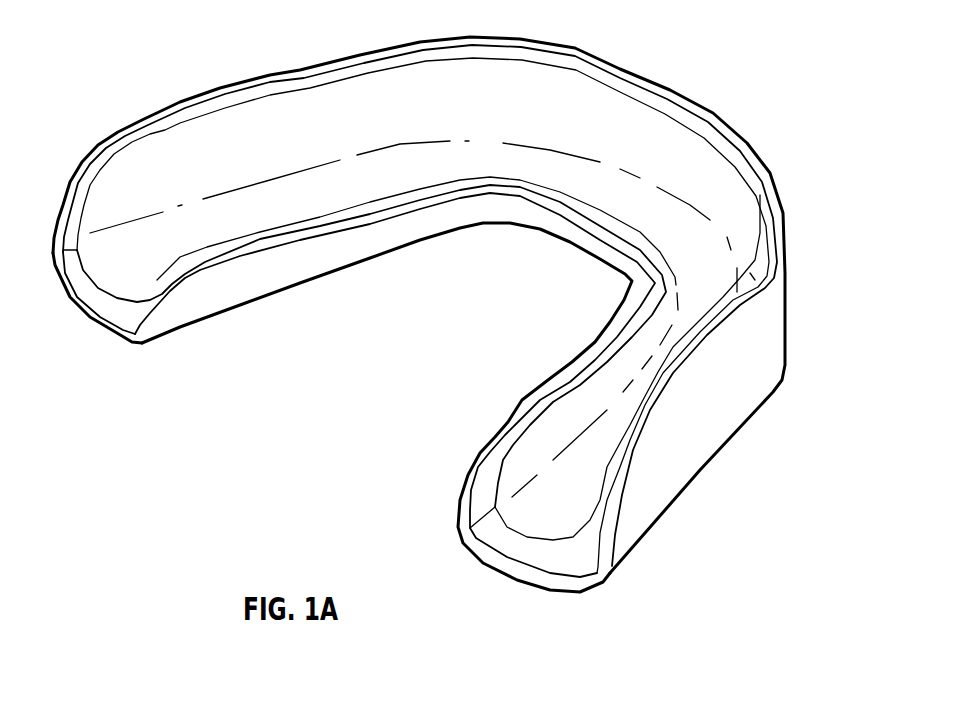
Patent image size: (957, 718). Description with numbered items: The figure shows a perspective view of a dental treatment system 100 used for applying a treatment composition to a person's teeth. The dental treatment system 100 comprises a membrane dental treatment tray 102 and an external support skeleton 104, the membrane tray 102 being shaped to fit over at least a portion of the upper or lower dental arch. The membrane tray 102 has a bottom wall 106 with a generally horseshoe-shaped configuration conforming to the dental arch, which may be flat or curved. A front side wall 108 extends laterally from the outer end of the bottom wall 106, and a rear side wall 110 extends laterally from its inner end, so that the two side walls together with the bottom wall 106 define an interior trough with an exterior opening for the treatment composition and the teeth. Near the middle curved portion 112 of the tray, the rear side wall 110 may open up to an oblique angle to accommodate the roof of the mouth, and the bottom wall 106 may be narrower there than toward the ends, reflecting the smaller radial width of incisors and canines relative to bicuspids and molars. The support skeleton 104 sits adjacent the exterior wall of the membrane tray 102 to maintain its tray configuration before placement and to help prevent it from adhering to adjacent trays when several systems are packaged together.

The dental treatment system 100 is at (463, 298).
The membrane dental treatment tray 102 is at (413, 266).
The external support skeleton 104 is at (434, 305).
The bottom wall 106 is at (491, 420).
The front side wall 108 is at (475, 315).
The rear side wall 110 is at (548, 377).
The middle curved portion 112 is at (392, 307).